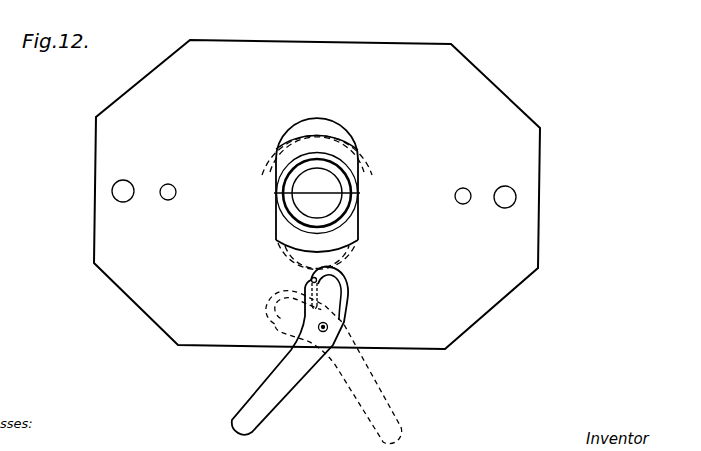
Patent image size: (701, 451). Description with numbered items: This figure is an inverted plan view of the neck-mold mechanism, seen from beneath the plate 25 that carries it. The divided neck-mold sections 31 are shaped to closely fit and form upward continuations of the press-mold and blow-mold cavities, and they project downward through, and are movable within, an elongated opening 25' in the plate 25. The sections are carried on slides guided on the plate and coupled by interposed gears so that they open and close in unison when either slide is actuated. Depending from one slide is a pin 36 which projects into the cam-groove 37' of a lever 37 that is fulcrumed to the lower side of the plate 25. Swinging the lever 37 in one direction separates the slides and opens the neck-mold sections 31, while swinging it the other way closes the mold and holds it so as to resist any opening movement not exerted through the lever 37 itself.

The plate 25 is at (317, 194).
The elongated opening 25' is at (295, 185).
The neck-mold sections 31 is at (346, 127).
The pin 36 is at (311, 280).
The lever 37 is at (332, 357).
The cam-groove 37' is at (350, 297).